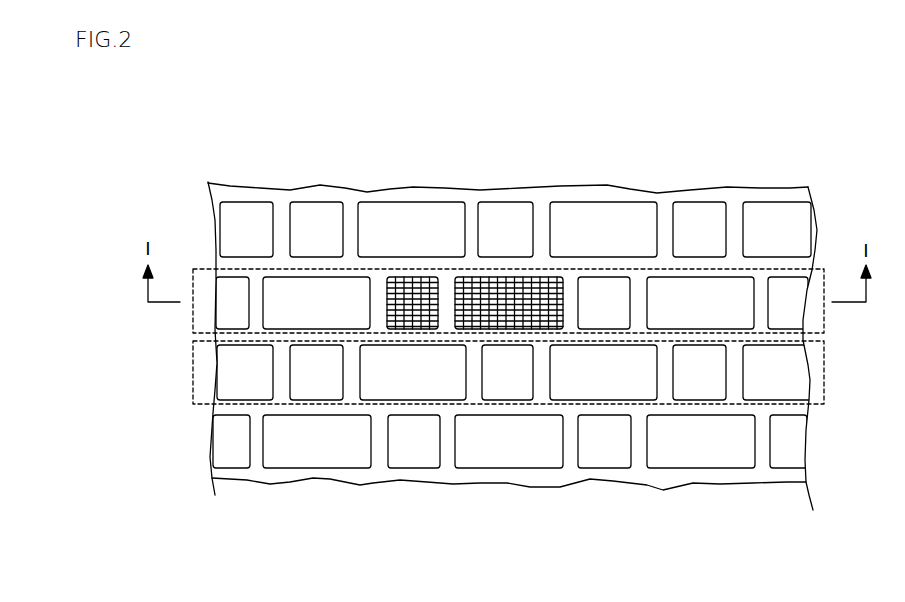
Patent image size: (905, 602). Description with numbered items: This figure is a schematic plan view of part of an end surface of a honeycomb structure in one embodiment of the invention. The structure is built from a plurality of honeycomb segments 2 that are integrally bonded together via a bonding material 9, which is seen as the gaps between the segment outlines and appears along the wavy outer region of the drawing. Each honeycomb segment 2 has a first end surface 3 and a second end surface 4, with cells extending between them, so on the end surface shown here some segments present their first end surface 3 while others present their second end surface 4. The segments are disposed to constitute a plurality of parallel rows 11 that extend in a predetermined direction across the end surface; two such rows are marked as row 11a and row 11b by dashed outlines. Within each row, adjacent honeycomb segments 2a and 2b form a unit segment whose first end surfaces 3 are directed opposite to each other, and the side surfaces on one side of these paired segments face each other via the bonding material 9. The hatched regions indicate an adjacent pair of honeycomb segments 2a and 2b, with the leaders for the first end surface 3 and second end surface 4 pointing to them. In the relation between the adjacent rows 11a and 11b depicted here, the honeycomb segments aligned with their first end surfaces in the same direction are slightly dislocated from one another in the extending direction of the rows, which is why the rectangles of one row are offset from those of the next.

The honeycomb segment 2 is at (492, 352).
The honeycomb segment 2a is at (400, 278).
The honeycomb segment 2b is at (502, 280).
The first end surface 3 is at (419, 280).
The second end surface 4 is at (532, 280).
The bonding material 9 is at (377, 455).
The row 11 is at (458, 340).
The row 11a is at (193, 309).
The row 11b is at (193, 377).